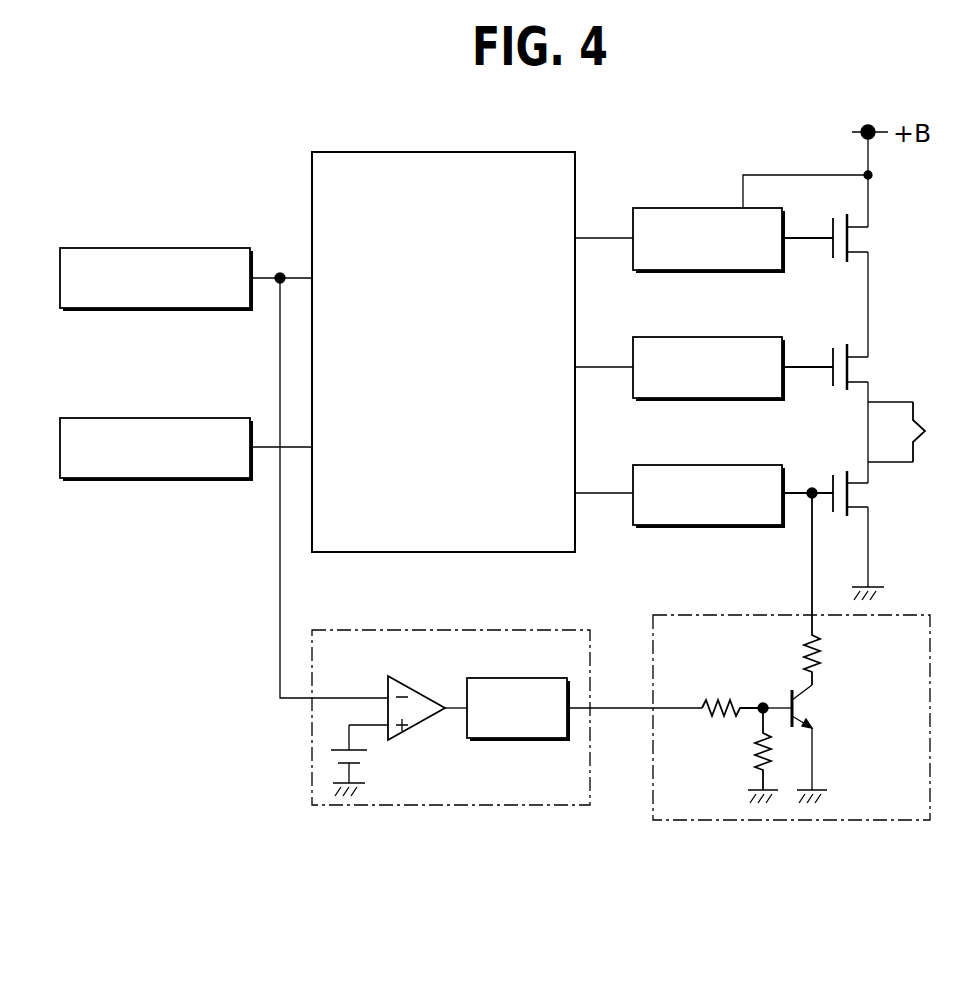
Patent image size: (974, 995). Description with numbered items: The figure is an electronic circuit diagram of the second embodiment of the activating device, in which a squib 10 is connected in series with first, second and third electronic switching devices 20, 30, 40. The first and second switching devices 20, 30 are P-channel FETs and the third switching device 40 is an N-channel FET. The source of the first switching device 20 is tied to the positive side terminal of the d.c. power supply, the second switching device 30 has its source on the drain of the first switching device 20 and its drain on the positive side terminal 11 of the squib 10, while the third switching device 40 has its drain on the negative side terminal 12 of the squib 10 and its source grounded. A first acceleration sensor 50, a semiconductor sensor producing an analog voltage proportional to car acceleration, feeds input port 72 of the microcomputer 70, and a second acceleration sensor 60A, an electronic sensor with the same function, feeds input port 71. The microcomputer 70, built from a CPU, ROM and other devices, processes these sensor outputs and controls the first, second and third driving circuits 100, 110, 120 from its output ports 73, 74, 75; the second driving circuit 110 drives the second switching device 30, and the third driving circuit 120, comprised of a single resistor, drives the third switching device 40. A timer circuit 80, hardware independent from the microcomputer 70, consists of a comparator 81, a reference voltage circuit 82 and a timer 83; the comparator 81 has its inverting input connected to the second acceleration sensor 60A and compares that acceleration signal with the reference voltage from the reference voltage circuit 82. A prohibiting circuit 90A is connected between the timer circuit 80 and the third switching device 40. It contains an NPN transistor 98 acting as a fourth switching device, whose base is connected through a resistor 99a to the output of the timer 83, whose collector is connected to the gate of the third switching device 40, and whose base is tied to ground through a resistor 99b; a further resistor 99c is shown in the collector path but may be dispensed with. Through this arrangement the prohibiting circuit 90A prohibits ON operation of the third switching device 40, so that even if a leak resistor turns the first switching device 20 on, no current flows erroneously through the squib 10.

The squib 10 is at (913, 402).
The positive side terminal of the squib 11 is at (868, 402).
The negative side terminal of the squib 12 is at (884, 461).
The first electronic switching device 20 is at (866, 238).
The second electronic switching device 30 is at (866, 366).
The third electronic switching device 40 is at (866, 494).
The first acceleration sensor 50 is at (75, 418).
The second acceleration sensor 60A is at (75, 248).
The microcomputer 70 is at (512, 150).
The input port 71 is at (302, 279).
The input port 72 is at (302, 448).
The output port 73 is at (583, 239).
The output port 74 is at (583, 369).
The output port 75 is at (583, 494).
The timer circuit 80 is at (451, 757).
The comparator 81 is at (422, 690).
The reference voltage circuit 82 is at (365, 757).
The timer 83 is at (540, 742).
The prohibiting circuit 90A is at (748, 697).
The NPN transistor 98 is at (808, 710).
The resistor 99a is at (737, 700).
The resistor 99b is at (750, 752).
The resistor 99c is at (822, 643).
The first driving circuit 100 is at (656, 208).
The second driving circuit 110 is at (656, 337).
The third driving circuit 120 is at (656, 465).